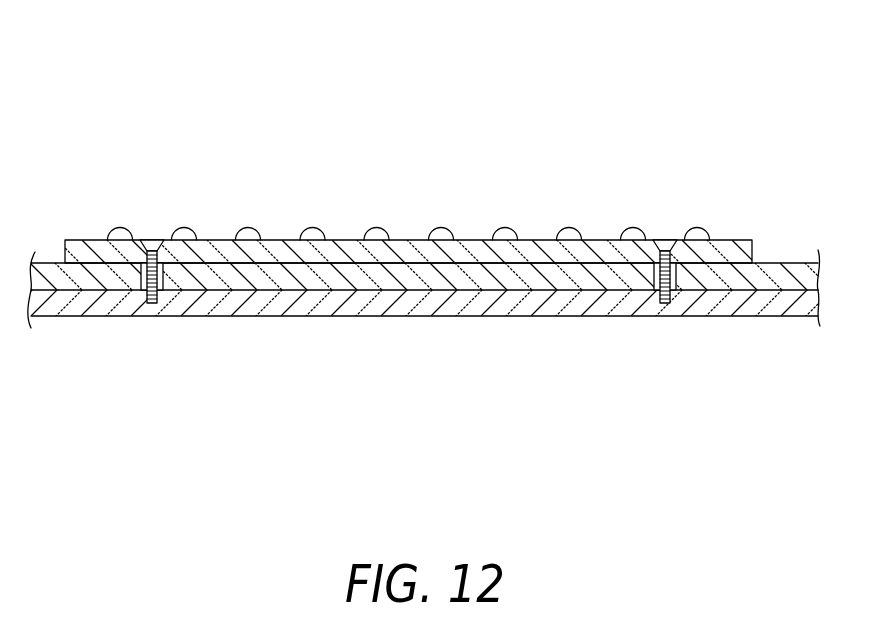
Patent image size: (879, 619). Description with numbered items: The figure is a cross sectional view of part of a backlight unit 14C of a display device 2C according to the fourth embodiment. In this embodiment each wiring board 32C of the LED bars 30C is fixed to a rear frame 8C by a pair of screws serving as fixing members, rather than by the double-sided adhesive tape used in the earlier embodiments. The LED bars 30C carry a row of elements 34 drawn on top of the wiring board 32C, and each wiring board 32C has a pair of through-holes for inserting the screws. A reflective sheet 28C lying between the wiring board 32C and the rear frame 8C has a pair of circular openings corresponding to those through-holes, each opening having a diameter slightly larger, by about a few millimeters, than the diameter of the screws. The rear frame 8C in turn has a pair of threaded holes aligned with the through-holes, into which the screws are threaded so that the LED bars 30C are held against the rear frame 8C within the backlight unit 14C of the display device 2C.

The display device 2C is at (428, 209).
The backlight unit 14C is at (408, 243).
The LED bar 30C is at (408, 191).
The wiring board 32C is at (477, 238).
The projections 34 is at (442, 228).
The reflective sheet 28C is at (773, 262).
The rear frame 8C is at (765, 305).